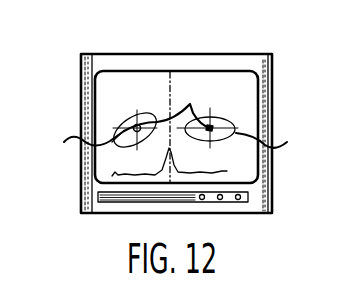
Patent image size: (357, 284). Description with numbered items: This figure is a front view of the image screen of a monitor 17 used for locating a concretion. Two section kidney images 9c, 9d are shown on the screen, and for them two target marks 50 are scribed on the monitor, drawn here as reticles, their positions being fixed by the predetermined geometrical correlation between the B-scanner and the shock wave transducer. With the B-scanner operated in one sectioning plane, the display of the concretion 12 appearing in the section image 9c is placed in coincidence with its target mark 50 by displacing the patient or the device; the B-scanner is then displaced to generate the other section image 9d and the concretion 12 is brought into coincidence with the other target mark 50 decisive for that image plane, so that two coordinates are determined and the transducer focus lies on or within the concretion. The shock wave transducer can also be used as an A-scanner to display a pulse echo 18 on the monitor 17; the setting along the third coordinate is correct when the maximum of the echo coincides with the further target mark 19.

The monitor 17 is at (271, 80).
The target mark 19 is at (169, 97).
The target marks 50 is at (167, 104).
The concretion 12 is at (136, 126).
The section kidney image 9d is at (81, 143).
The section kidney image 9c is at (274, 144).
The pulse echo 18 is at (227, 171).